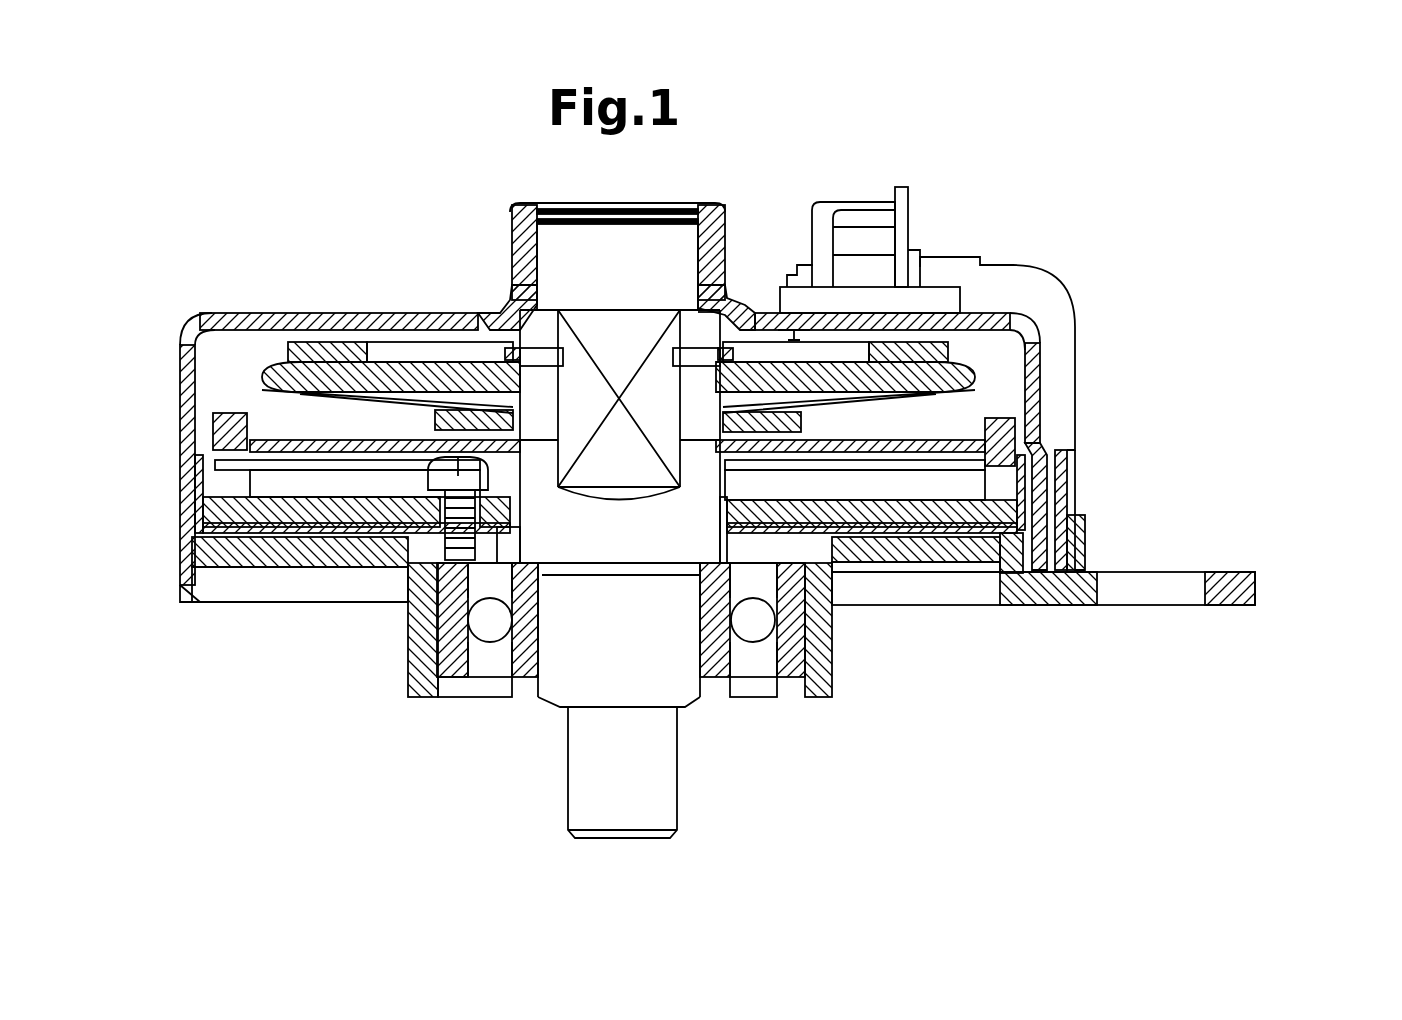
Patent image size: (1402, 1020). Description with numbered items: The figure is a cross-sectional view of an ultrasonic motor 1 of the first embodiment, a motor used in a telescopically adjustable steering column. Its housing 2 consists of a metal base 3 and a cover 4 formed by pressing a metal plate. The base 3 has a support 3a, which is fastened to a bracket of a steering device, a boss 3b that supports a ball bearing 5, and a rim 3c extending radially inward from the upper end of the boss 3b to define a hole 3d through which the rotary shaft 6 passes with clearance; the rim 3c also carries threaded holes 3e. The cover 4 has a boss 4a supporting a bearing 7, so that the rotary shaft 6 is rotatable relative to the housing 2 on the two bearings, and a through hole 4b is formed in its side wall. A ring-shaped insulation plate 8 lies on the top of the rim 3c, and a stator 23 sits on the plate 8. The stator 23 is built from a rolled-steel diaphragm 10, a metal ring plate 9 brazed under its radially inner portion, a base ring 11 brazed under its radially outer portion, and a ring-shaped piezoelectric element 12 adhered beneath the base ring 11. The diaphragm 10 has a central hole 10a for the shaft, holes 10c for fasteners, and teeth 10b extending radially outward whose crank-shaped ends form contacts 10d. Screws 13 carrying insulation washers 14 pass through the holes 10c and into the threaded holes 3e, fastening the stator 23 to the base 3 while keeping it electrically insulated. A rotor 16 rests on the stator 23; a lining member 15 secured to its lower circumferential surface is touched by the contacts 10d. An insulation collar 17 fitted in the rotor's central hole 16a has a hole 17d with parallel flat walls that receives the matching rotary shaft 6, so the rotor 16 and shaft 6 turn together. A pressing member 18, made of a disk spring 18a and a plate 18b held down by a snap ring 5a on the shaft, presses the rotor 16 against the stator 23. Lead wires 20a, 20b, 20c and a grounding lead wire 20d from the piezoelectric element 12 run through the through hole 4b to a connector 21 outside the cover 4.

The ultrasonic motor 1 is at (270, 263).
The housing 2 is at (1067, 605).
The base 3 is at (937, 573).
The support 3a is at (1222, 600).
The boss 3b is at (825, 680).
The rim 3c is at (690, 575).
The hole 3d is at (540, 592).
The threaded holes 3e is at (412, 618).
The cover 4 is at (412, 313).
The boss 4a is at (510, 232).
The through hole 4b is at (1053, 523).
The ball bearing 5 is at (783, 667).
The snap ring 5a is at (700, 330).
The rotary shaft 6 is at (670, 805).
The bearing 7 is at (718, 222).
The insulation plate 8 is at (523, 548).
The ring plate 9 is at (727, 513).
The diaphragm 10 is at (232, 505).
The hole 10a is at (563, 470).
The teeth 10b is at (337, 487).
The holes 10c is at (425, 425).
The contact 10d is at (200, 480).
The base ring 11 is at (953, 517).
The piezoelectric element 12 is at (1000, 533).
The screw 13 is at (410, 573).
The insulation washer 14 is at (513, 510).
The lining member 15 is at (1017, 422).
The rotor 16 is at (233, 413).
The hole 16a is at (720, 433).
The insulation collar 17 is at (548, 375).
The hole 17d is at (520, 427).
The pressing member 18 is at (1150, 330).
The disk spring 18a is at (1035, 375).
The plate 18b is at (1035, 345).
The lead wire 20a is at (1068, 300).
The lead wire 20b is at (1044, 296).
The lead wire 20c is at (1071, 388).
The grounding lead wire 20d is at (1080, 510).
The connector 21 is at (862, 215).
The stator 23 is at (260, 533).